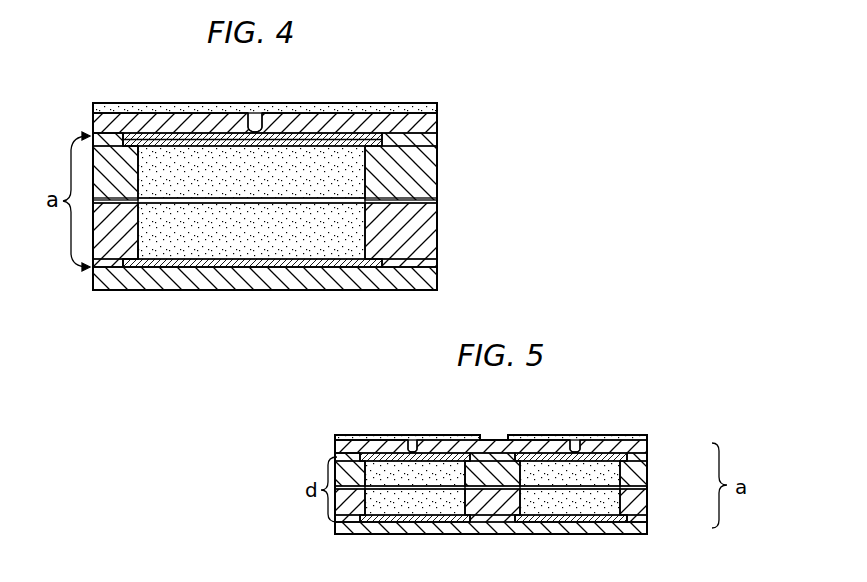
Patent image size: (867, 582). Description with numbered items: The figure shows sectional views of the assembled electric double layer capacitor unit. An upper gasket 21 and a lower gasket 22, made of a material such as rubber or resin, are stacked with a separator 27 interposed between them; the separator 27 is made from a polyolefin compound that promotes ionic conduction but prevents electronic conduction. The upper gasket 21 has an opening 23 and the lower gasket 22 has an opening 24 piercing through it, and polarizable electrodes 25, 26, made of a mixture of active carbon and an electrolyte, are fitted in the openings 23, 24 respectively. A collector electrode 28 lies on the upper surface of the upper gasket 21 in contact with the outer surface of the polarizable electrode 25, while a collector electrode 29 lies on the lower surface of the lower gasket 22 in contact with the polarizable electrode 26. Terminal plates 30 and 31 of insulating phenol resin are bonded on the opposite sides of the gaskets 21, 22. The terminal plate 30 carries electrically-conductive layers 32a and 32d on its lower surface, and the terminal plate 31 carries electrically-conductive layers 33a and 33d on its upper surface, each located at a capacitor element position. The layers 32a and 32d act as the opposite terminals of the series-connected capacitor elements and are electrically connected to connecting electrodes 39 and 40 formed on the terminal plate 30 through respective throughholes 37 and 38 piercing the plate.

In FIG. 4, the upper gasket 21 is at (437, 167).
In FIG. 5, the upper gasket 21 is at (647, 470).
In FIG. 4, the lower gasket 22 is at (437, 232).
In FIG. 5, the lower gasket 22 is at (647, 505).
In FIG. 4, the opening 23 is at (152, 152).
In FIG. 4, the opening 24 is at (148, 262).
In FIG. 4, the polarizable electrode 25 is at (333, 162).
In FIG. 5, the polarizable electrode 25 is at (398, 470).
In FIG. 4, the polarizable electrode 26 is at (345, 245).
In FIG. 5, the polarizable electrode 26 is at (436, 505).
In FIG. 4, the separator 27 is at (437, 201).
In FIG. 5, the separator 27 is at (647, 488).
In FIG. 4, the collector electrode 28 is at (318, 139).
In FIG. 5, the collector electrode 28 is at (453, 456).
In FIG. 4, the collector electrode 29 is at (283, 264).
In FIG. 5, the collector electrode 29 is at (398, 519).
In FIG. 4, the terminal plate 30 is at (437, 126).
In FIG. 5, the terminal plate 30 is at (647, 442).
In FIG. 4, the terminal plate 31 is at (437, 279).
In FIG. 5, the terminal plate 31 is at (647, 528).
In FIG. 4, the electrically-conductive layer 32a is at (212, 126).
In FIG. 5, the electrically-conductive layer 32a is at (538, 452).
In FIG. 5, the electrically-conductive layer 32d is at (386, 452).
In FIG. 4, the electrically-conductive layer 33a is at (218, 282).
In FIG. 5, the electrically-conductive layer 33a is at (546, 521).
In FIG. 5, the electrically-conductive layer 33d is at (372, 521).
In FIG. 4, the throughhole 37 is at (257, 130).
In FIG. 5, the throughhole 37 is at (575, 450).
In FIG. 5, the throughhole 38 is at (413, 450).
In FIG. 4, the connecting electrode 39 is at (395, 108).
In FIG. 5, the connecting electrode 39 is at (625, 438).
In FIG. 5, the connecting electrode 40 is at (356, 437).